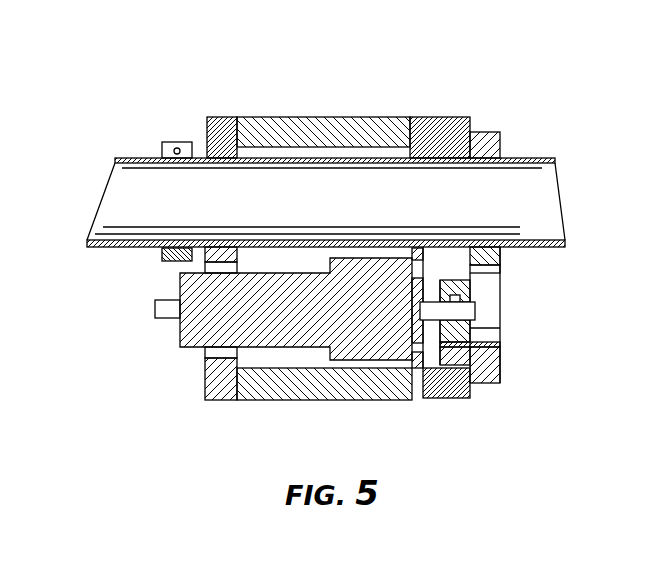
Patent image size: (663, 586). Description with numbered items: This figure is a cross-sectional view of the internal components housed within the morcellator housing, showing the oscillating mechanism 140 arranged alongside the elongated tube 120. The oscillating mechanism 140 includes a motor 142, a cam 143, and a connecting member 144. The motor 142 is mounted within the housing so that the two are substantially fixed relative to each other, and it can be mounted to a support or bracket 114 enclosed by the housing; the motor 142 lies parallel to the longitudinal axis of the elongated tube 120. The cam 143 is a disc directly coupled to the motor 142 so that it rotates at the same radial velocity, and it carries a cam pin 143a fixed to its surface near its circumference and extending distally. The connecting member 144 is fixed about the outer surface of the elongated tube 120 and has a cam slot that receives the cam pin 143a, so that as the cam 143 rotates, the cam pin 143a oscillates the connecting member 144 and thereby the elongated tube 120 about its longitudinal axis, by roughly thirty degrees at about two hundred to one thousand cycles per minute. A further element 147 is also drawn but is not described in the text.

The bracket 114 is at (219, 129).
The elongated tube 120 is at (562, 222).
The oscillating mechanism 140 is at (487, 445).
The motor 142 is at (259, 324).
The cam 143 is at (467, 301).
The cam pin 143a is at (466, 351).
The connecting member 144 is at (498, 375).
The ring 147 is at (160, 265).